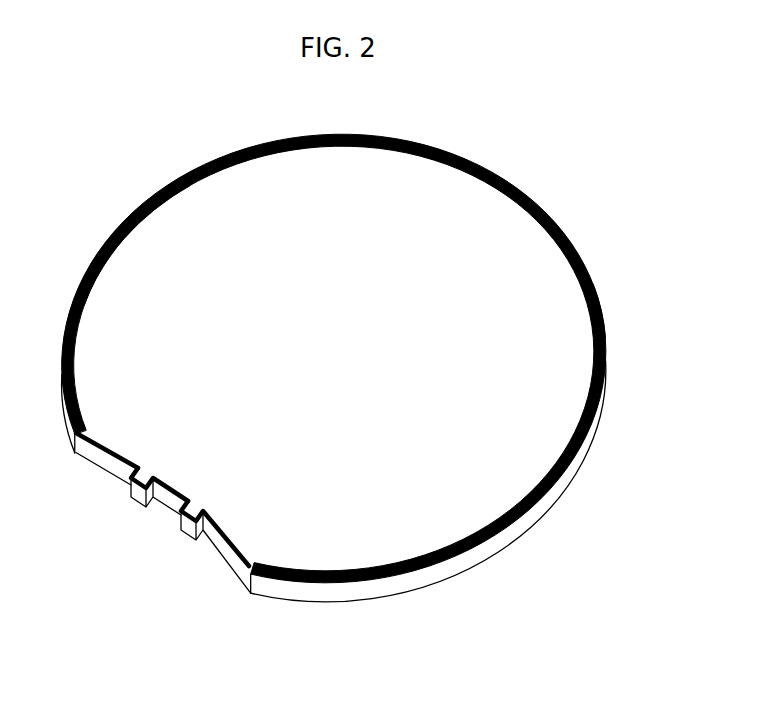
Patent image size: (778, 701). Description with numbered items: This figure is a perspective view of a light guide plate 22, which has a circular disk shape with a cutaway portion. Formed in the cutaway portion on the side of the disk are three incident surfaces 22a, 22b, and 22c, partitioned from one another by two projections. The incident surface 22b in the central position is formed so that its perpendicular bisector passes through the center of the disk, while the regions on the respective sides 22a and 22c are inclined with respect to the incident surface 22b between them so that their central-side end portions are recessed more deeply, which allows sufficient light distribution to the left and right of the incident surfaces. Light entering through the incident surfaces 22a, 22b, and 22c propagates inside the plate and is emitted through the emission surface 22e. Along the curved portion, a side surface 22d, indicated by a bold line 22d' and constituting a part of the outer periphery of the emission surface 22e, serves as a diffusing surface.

The light guide plate 22 is at (360, 379).
The incident surface 22a is at (98, 447).
The incident surface 22b is at (160, 495).
The incident surface 22c is at (215, 547).
The side surface 22d is at (449, 481).
The bold line 22d' is at (644, 293).
The emission surface 22e is at (202, 205).